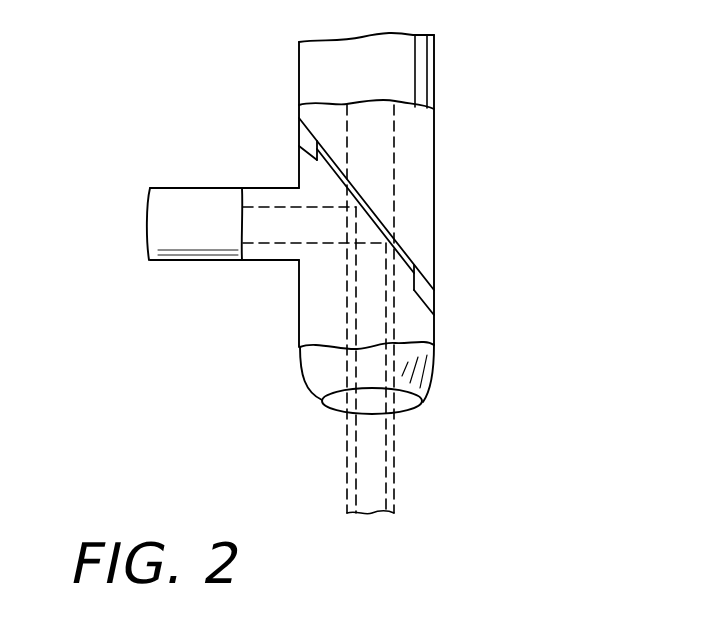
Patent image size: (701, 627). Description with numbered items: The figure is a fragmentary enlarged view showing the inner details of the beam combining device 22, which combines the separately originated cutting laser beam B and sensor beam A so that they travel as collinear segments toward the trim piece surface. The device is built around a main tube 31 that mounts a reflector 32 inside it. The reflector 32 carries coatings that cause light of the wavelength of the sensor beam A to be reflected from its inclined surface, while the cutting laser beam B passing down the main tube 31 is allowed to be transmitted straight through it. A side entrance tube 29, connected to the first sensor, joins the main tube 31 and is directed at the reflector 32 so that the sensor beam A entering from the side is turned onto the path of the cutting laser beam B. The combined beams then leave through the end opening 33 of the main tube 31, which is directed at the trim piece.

The beam combining device 22 is at (454, 231).
The side entrance tube 29 is at (177, 187).
The main tube 31 is at (435, 62).
The reflector 32 is at (300, 174).
The end opening 33 is at (405, 404).
The sensor beam A is at (273, 206).
The cutting laser beam B is at (394, 150).